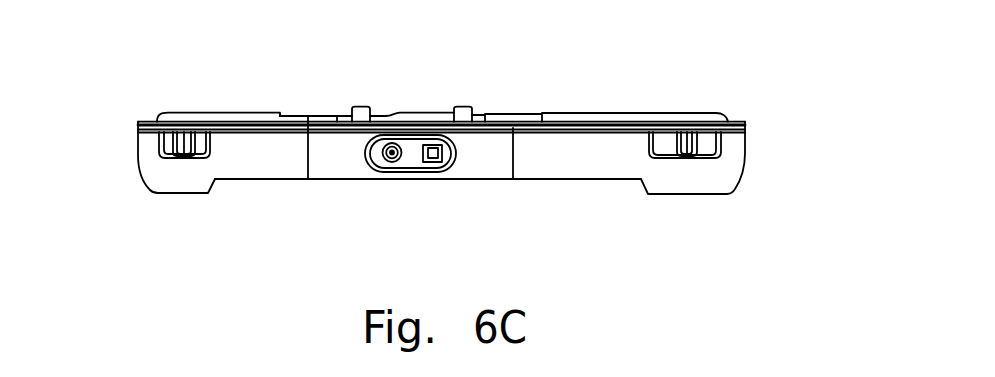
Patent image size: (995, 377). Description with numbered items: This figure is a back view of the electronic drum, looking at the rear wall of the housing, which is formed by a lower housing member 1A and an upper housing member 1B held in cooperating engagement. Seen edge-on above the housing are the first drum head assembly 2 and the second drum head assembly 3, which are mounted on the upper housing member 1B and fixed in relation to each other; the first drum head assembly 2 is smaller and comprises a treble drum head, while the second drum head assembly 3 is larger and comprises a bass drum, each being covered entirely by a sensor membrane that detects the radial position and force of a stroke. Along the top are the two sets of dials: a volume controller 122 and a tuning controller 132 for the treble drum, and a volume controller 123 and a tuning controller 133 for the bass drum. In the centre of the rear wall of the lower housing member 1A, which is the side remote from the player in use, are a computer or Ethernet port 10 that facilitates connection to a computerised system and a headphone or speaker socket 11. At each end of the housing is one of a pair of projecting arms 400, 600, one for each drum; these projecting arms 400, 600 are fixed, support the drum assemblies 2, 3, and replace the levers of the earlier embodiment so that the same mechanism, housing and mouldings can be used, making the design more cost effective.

The lower housing member 1A is at (732, 147).
The upper housing member 1B is at (139, 122).
The first drum head assembly 2 is at (213, 111).
The second drum head assembly 3 is at (662, 112).
The computer or Ethernet port 10 is at (432, 162).
The headphone or speaker socket 11 is at (389, 162).
The volume controller 122 is at (360, 113).
The volume controller 123 is at (463, 113).
The tuning controller 132 is at (308, 117).
The tuning controller 133 is at (523, 117).
The projecting arm 400 is at (184, 156).
The projecting arm 600 is at (687, 157).